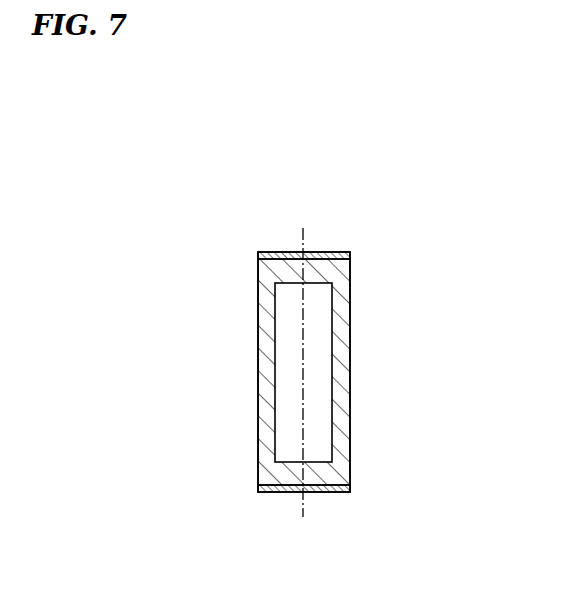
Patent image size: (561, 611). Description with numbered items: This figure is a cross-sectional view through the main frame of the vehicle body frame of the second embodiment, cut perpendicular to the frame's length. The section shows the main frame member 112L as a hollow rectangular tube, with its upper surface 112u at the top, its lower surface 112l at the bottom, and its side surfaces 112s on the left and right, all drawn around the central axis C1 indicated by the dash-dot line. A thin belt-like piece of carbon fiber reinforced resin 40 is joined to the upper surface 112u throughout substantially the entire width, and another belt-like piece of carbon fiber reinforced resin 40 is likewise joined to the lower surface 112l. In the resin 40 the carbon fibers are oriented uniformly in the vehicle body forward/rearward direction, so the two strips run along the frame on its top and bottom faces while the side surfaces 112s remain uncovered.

The carbon fiber reinforced resin 40 is at (280, 252).
The lower body portion 112L is at (370, 259).
The upper surface 112u is at (323, 252).
The lower surface 112l is at (290, 492).
The side surface 112s is at (258, 383).
The center axis C1 is at (300, 440).